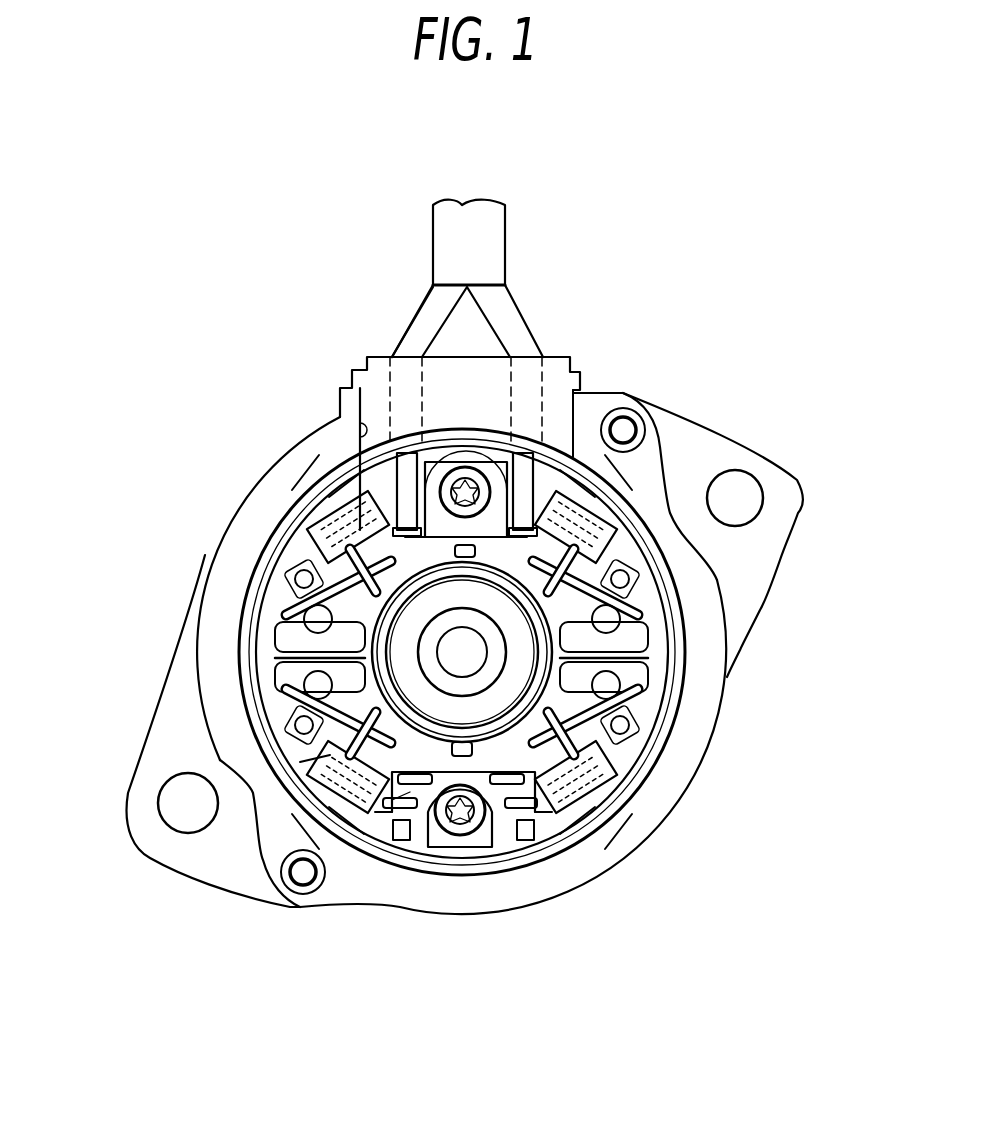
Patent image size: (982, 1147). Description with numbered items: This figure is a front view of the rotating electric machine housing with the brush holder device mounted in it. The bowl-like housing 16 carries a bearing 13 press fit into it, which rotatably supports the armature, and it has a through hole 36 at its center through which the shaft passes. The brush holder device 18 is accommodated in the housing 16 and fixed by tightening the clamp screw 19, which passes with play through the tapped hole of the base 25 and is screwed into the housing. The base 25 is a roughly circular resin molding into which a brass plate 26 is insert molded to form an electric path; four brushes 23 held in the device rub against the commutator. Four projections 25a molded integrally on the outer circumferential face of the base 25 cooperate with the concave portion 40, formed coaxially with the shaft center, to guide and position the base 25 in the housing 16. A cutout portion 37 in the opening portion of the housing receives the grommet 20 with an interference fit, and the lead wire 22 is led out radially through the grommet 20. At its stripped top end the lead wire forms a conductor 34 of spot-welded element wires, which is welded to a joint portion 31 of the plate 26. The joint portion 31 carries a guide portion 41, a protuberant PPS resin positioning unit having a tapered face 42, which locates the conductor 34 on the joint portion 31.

The bearing 13 is at (430, 660).
The housing 16 is at (200, 850).
The brush holder device 18 is at (533, 304).
The clamp screw 19 is at (462, 657).
The grommet 20 is at (560, 366).
The lead wire 22 is at (412, 333).
The brush 23 is at (300, 762).
The base 25 is at (657, 650).
The projection 25a is at (610, 805).
The plate 26 is at (265, 633).
The joint portion 31 is at (363, 447).
The conductor 34 is at (523, 484).
The through hole 36 is at (395, 800).
The cutout portion 37 is at (360, 430).
The concave portion 40 is at (510, 850).
The guide portion 41 is at (397, 490).
The tapered face 42 is at (575, 500).